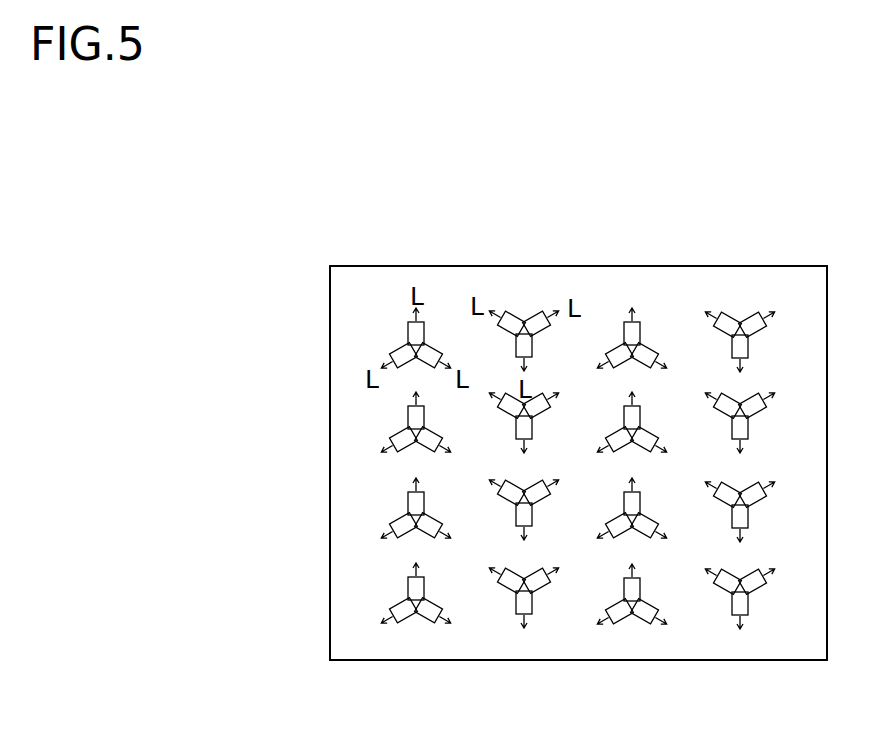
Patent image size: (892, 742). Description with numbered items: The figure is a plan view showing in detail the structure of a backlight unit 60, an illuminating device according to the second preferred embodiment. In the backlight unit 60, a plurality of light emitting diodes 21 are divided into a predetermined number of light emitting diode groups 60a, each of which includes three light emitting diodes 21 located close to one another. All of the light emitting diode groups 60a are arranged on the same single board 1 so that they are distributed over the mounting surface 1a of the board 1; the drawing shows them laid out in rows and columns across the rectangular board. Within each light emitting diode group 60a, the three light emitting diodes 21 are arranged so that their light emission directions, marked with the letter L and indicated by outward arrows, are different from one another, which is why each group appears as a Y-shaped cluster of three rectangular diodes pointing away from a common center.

The board 1 is at (340, 630).
The mounting surface 1a is at (352, 643).
The light emitting diode 21 is at (405, 335).
The backlight unit 60 is at (352, 257).
The light emitting diode group 60a is at (527, 429).